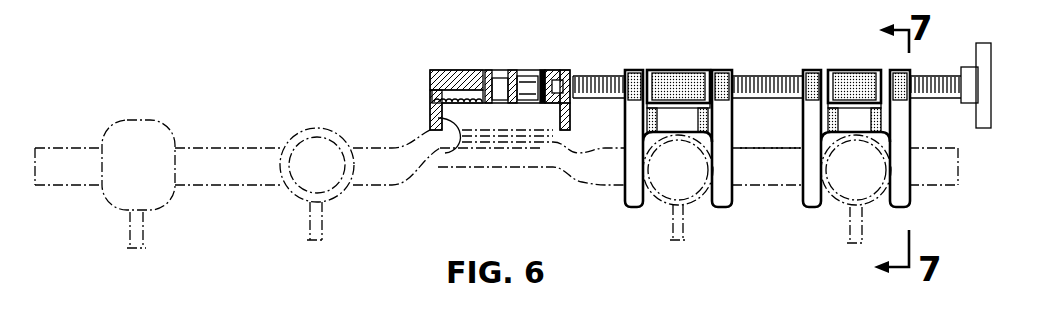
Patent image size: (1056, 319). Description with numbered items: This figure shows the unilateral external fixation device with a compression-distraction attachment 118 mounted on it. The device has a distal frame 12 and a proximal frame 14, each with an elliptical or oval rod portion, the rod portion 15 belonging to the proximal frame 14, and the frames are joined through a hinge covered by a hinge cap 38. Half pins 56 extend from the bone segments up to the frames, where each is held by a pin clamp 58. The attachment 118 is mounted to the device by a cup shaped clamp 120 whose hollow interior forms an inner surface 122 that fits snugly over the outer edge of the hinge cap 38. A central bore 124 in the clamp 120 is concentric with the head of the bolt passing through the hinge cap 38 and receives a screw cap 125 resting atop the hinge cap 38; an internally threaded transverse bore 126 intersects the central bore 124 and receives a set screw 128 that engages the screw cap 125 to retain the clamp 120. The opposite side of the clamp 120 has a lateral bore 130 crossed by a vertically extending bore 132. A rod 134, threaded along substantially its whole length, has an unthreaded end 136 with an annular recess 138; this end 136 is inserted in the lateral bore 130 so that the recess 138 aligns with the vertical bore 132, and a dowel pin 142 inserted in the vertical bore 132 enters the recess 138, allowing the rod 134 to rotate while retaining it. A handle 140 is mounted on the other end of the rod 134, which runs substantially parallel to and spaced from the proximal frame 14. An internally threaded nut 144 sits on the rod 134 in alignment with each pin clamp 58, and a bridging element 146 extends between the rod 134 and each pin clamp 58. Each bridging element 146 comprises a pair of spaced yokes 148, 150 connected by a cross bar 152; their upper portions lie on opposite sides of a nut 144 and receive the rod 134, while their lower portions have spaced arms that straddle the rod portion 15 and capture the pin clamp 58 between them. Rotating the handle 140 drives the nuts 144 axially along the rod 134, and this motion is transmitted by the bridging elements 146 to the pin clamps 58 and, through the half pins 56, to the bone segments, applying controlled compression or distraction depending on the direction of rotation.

The distal frame 12 is at (235, 146).
The proximal frame 14 is at (963, 165).
The rod portion 15 is at (780, 128).
The hinge cap 38 is at (484, 120).
The half pin 56 is at (145, 245).
The pin clamp 58 is at (200, 77).
The compression-distraction attachment 118 is at (731, 50).
The cup shaped clamp 120 is at (566, 73).
The inner surface 122 is at (458, 142).
The central bore 124 is at (473, 80).
The screw cap 125 is at (512, 72).
The transverse bore 126 is at (451, 68).
The set screw 128 is at (433, 97).
The lateral bore 130 is at (541, 80).
The vertical bore 132 is at (565, 68).
The rod 134 is at (762, 77).
The end of rod 136 is at (527, 80).
The annular recess 138 is at (569, 104).
The handle 140 is at (993, 62).
The dowel pin 142 is at (535, 97).
The nut 144 is at (661, 68).
The bridging element 146 is at (734, 64).
The yoke 148 is at (633, 202).
The yoke 150 is at (715, 207).
The cross bar 152 is at (680, 134).